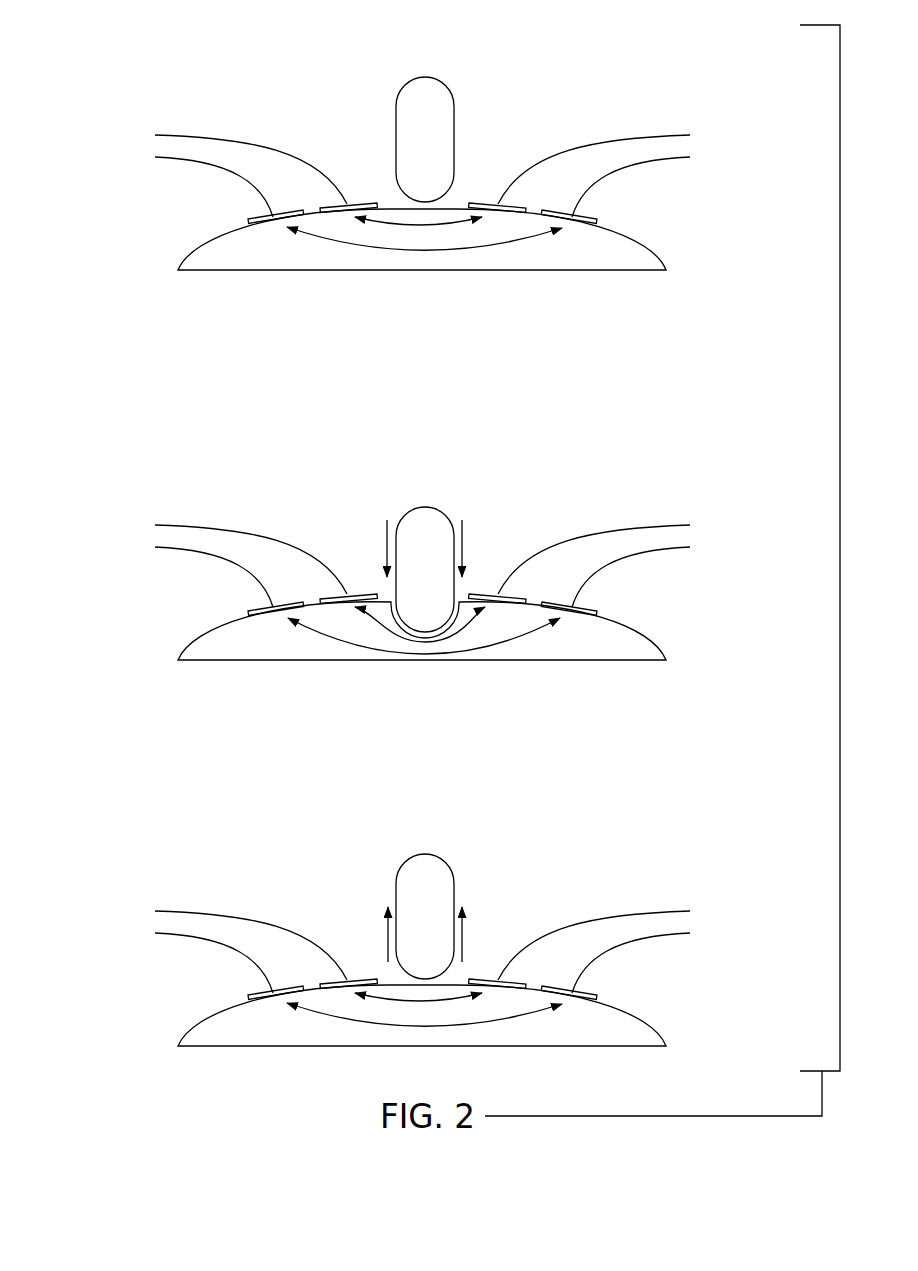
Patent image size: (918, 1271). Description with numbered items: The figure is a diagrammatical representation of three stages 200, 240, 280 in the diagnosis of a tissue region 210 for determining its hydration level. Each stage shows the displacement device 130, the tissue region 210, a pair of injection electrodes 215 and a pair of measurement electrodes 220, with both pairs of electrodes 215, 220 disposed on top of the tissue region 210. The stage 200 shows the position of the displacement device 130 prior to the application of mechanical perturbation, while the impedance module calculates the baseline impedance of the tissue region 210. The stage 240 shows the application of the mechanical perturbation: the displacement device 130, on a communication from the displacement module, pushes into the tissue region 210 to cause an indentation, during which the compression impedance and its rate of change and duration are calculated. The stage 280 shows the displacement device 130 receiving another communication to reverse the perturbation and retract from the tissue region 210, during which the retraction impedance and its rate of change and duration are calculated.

The stage 200 is at (135, 47).
The stage 240 is at (135, 437).
The stage 280 is at (135, 822).
The displacement device 130 is at (456, 100).
The tissue region 210 is at (661, 250).
The pair of injection electrodes 215 is at (247, 220).
The pair of measurement electrodes 220 is at (361, 200).